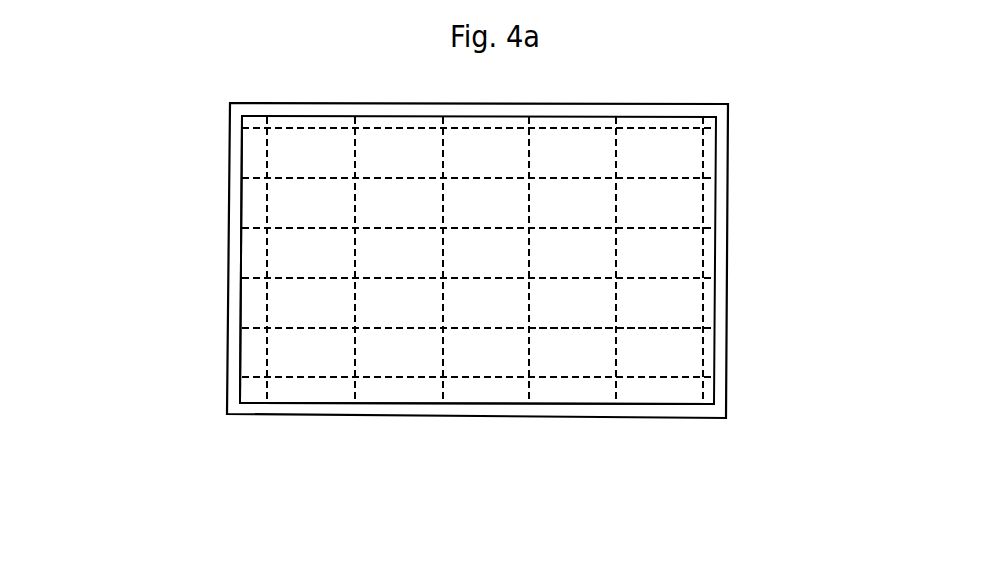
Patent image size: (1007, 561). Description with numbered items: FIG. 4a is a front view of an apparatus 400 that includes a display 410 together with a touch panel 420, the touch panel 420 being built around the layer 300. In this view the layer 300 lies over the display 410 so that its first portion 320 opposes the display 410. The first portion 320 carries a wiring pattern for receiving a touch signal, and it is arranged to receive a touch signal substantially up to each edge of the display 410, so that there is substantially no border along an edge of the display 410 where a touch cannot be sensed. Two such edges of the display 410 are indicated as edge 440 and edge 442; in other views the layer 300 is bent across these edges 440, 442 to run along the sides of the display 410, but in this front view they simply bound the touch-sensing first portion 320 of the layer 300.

The apparatus 400 is at (745, 128).
The display 410 is at (717, 248).
The layer 300 is at (678, 230).
The touch panel 420 is at (671, 302).
The first portion 320 is at (660, 332).
The edge 440 is at (662, 408).
The edge 442 is at (242, 208).